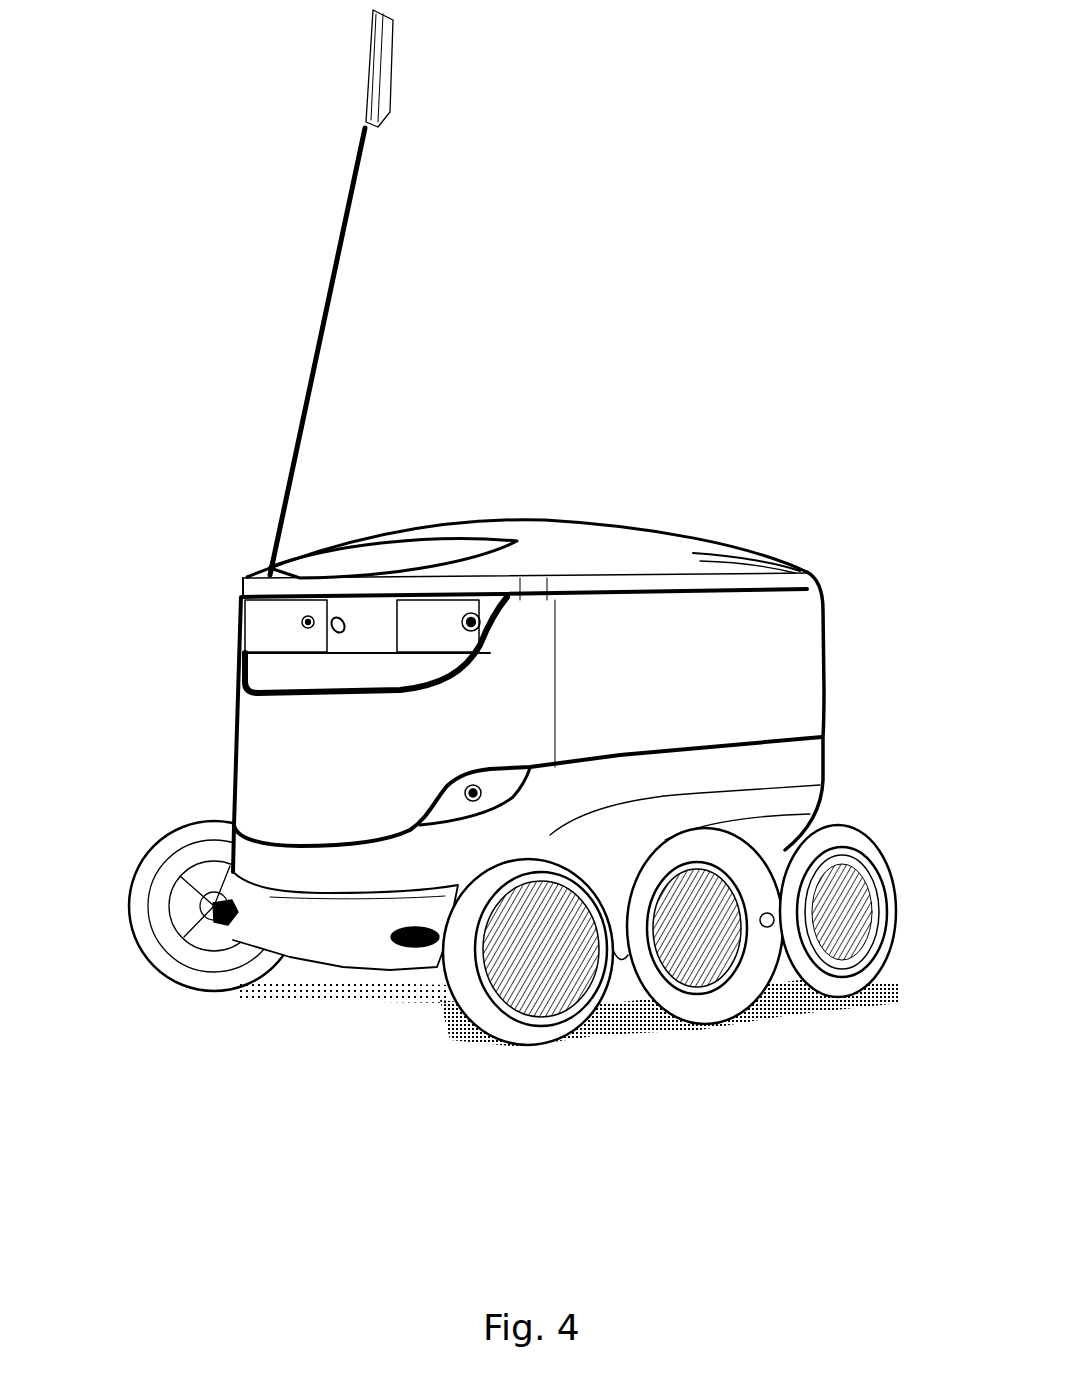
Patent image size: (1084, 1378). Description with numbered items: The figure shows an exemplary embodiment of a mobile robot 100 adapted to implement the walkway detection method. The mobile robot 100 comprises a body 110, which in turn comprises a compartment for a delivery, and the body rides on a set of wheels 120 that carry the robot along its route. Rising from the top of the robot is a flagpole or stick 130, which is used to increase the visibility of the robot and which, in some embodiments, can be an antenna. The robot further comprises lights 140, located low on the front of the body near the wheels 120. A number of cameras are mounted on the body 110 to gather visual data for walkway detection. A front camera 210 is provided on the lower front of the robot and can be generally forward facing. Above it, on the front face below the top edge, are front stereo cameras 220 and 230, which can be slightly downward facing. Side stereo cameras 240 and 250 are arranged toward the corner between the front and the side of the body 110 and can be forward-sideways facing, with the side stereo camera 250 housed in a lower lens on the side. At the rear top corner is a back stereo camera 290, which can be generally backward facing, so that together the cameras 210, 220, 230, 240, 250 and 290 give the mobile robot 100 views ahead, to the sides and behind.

The mobile robot 100 is at (538, 422).
The body 110 is at (200, 738).
The wheels 120 is at (773, 1020).
The flagpole or stick 130 is at (306, 112).
The lights 140 is at (375, 975).
The front camera 210 is at (305, 667).
The front stereo camera 220 is at (304, 579).
The front stereo camera 230 is at (364, 592).
The side stereo camera 240 is at (494, 591).
The side stereo camera 250 is at (503, 754).
The back stereo camera 290 is at (839, 582).